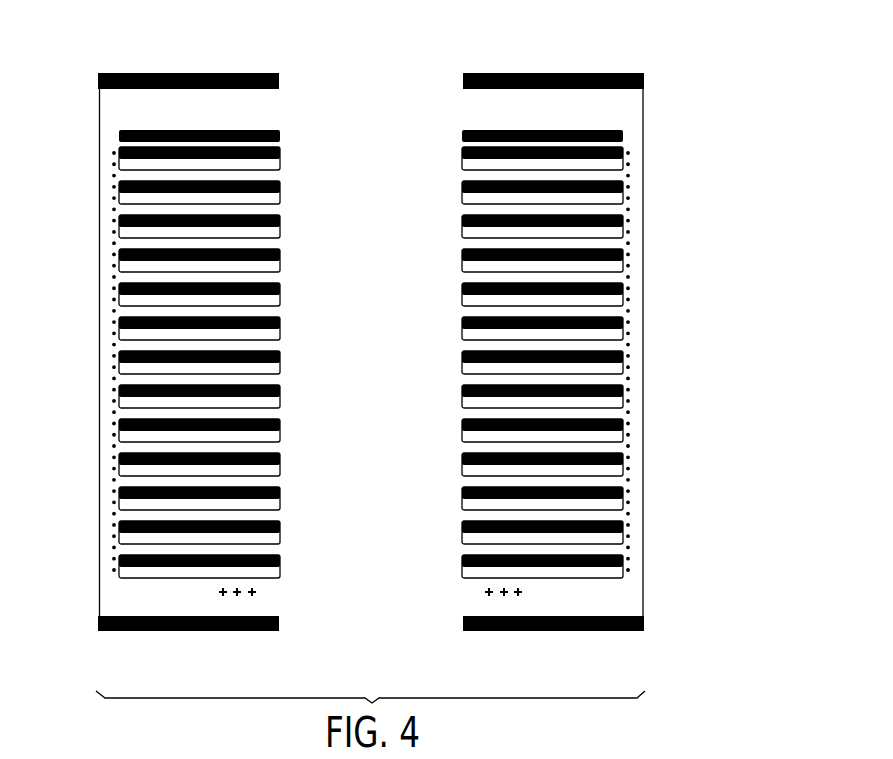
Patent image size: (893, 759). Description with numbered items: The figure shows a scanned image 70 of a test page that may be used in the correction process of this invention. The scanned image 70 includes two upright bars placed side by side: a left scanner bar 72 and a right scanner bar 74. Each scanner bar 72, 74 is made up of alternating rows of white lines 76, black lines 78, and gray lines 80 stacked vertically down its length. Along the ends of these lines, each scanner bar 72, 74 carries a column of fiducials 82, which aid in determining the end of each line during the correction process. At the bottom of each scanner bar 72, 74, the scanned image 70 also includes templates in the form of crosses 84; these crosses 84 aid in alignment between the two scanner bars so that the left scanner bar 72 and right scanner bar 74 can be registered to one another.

The scanned image 70 is at (707, 67).
The left scanner bar 72 is at (245, 73).
The right scanner bar 74 is at (557, 73).
The white lines 76 is at (276, 212).
The black lines 78 is at (278, 222).
The gray lines 80 is at (278, 302).
The fiducials 82 is at (113, 320).
The crosses 84 is at (252, 597).